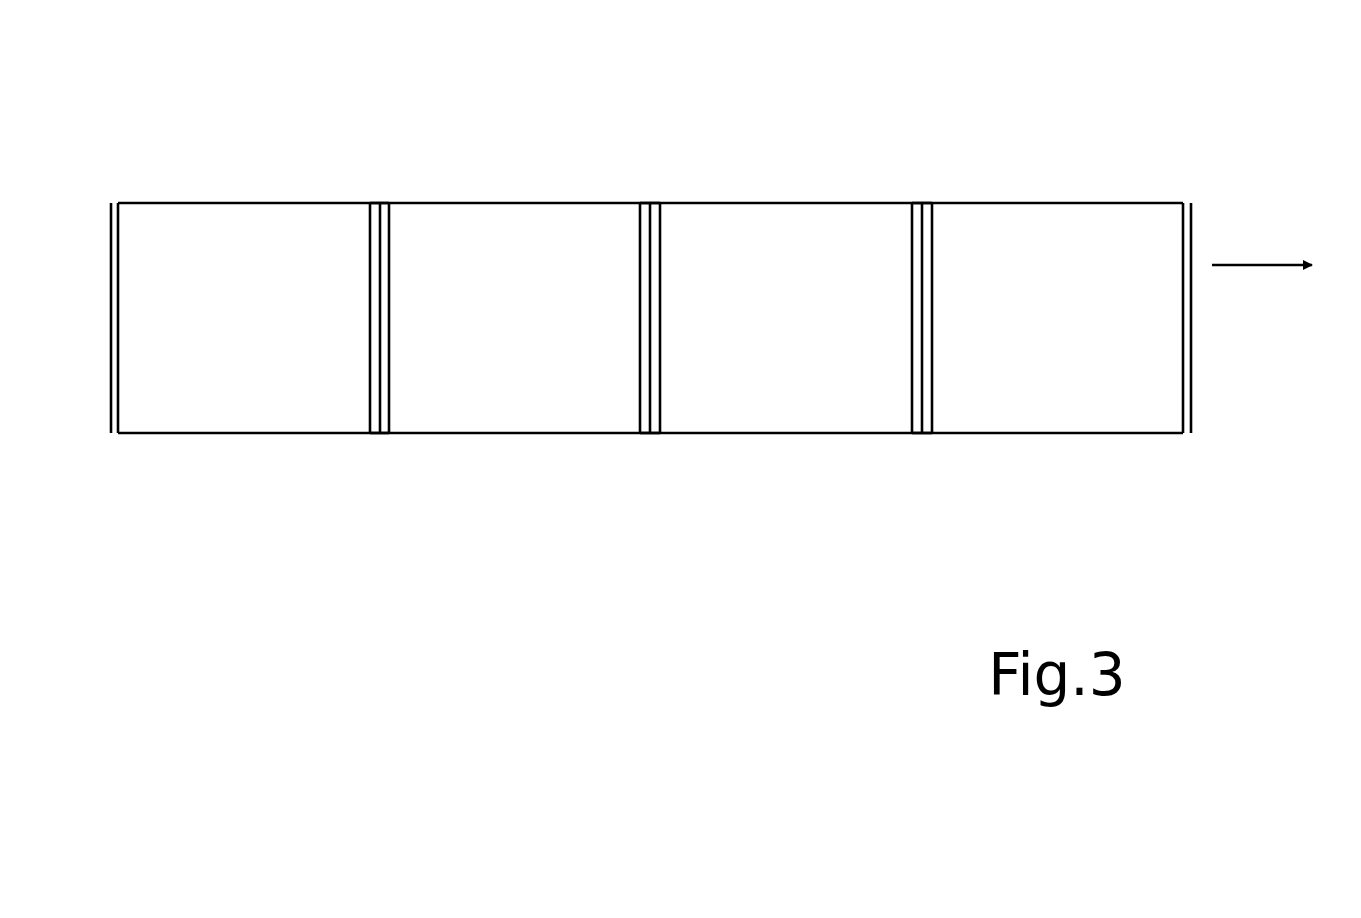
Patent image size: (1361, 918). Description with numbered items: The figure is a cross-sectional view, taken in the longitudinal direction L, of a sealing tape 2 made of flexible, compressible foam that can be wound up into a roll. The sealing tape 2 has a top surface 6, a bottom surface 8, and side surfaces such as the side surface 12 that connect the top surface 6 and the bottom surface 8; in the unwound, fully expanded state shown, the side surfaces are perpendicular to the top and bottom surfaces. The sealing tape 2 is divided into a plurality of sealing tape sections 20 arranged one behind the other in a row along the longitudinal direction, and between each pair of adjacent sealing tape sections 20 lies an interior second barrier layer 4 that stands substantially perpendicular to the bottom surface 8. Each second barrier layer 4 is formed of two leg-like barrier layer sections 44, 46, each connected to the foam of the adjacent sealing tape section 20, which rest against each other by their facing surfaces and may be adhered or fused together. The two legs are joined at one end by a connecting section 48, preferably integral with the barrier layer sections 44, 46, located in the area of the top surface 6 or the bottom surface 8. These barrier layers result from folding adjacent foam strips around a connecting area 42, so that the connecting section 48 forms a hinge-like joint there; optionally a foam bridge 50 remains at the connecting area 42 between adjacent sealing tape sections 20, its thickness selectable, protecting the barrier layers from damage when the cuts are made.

The sealing tape 2 is at (1236, 120).
The second barrier layer 4 is at (110, 407).
The top surface 6 is at (1070, 203).
The bottom surface 8 is at (1095, 435).
The side surface 12 is at (1110, 245).
The sealing tape section 20 is at (210, 390).
The connecting area 42 is at (383, 193).
The barrier layer section 44 is at (640, 262).
The barrier layer section 46 is at (660, 240).
The connecting section 48 is at (378, 203).
The foam bridge 50 is at (384, 203).